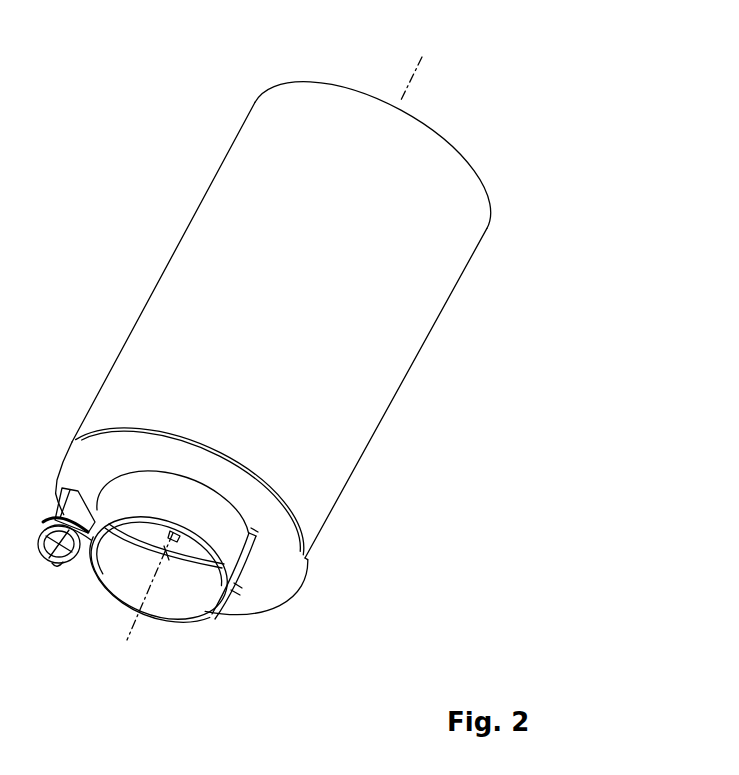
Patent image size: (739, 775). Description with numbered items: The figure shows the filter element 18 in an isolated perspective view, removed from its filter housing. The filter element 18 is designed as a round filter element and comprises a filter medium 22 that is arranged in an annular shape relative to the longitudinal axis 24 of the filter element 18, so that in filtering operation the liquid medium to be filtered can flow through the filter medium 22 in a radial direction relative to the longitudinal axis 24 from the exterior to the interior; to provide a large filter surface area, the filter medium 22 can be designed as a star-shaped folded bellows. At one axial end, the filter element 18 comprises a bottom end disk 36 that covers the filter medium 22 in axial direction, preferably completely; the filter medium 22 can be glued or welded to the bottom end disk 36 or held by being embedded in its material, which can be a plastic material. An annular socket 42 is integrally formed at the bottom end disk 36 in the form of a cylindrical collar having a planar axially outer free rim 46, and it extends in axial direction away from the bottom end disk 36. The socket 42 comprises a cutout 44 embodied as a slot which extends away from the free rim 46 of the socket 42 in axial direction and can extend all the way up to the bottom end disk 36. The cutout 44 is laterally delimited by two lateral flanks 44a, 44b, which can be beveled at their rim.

The filter element 18 is at (535, 148).
The filter medium 22 is at (388, 363).
The longitudinal axis 24 is at (408, 85).
The bottom end disk 36 is at (267, 528).
The socket 42 is at (138, 584).
The cutout 44 is at (235, 551).
The lateral flank 44a is at (247, 530).
The lateral flank 44b is at (245, 598).
The free rim 46 is at (178, 618).